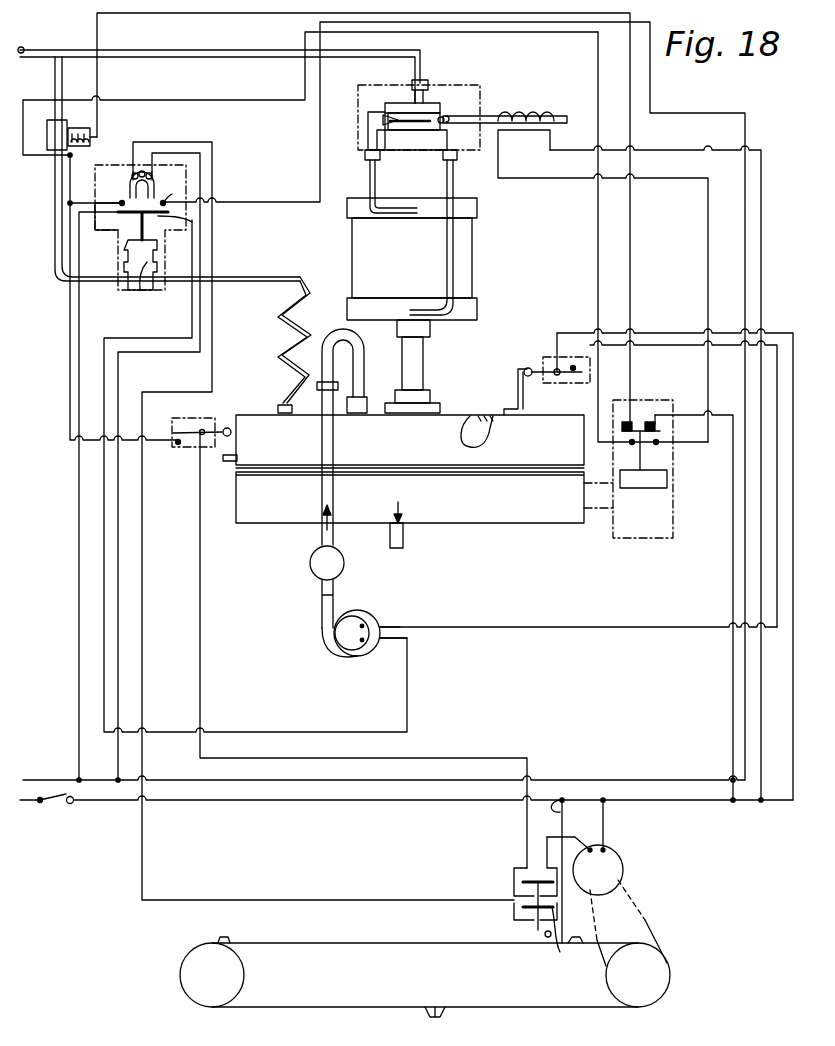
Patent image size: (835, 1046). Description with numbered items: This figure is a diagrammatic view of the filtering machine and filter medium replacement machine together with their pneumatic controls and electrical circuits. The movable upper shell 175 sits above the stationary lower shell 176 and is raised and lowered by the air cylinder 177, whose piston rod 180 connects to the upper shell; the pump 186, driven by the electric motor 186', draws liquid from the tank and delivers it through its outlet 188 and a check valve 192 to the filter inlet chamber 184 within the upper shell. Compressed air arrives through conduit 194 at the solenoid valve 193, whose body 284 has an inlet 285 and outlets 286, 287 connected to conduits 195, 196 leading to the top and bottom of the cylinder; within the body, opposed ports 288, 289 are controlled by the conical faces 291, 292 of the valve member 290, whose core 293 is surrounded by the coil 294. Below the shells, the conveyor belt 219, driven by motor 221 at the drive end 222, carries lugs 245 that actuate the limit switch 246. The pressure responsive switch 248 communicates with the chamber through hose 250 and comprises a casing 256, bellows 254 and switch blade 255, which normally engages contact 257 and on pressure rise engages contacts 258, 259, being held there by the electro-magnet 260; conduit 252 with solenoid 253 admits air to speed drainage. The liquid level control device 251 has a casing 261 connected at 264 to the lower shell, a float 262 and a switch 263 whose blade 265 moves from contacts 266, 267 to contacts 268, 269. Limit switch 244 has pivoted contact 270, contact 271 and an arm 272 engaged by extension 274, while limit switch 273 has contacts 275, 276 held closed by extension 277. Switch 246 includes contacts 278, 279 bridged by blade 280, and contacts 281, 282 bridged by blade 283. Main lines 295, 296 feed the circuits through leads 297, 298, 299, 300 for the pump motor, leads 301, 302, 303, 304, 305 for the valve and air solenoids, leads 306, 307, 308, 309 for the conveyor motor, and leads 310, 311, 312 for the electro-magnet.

The upper shell 175 is at (434, 448).
The lower shell 176 is at (497, 506).
The air cylinder 177 is at (480, 228).
The piston rod 180 is at (424, 352).
The filter inlet chamber 184 is at (478, 413).
The pump 186 is at (374, 628).
The electric motor 186' is at (355, 656).
The outlet 188 is at (334, 600).
The check valve 192 is at (312, 571).
The solenoid valve 193 is at (501, 71).
The conduit 194 is at (230, 50).
The conduit 195 is at (376, 186).
The conduit 196 is at (456, 270).
The conveyor belt 219 is at (410, 943).
The electric motor 221 is at (624, 866).
The feed or drive end 222 is at (672, 962).
The limit switch 244 is at (217, 409).
The lugs 245 is at (229, 937).
The limit switch 246 is at (537, 919).
The pressure responsive switch 248 is at (117, 306).
The flexible conduit or hose 250 is at (280, 350).
The liquid level control device 251 is at (687, 518).
The conduit 252 is at (58, 224).
The solenoid 253 is at (48, 140).
The pressure responsive bellows 254 is at (143, 292).
The switch blade 255 is at (130, 215).
The casing 256 is at (122, 267).
The contact 257 is at (170, 218).
The contact 258 is at (109, 204).
The contact 259 is at (166, 189).
The electro-magnet 260 is at (132, 178).
The casing 261 is at (656, 540).
The float 262 is at (654, 488).
The float actuated switch 263 is at (640, 428).
The connection 264 is at (598, 512).
The blade 265 is at (626, 420).
The contact 266 is at (652, 420).
The contact 267 is at (660, 430).
The contact 268 is at (630, 444).
The contact 269 is at (658, 444).
The pivoted contact 270 is at (186, 430).
The contact 271 is at (176, 445).
The operating arm 272 is at (228, 428).
The limit switch 273 is at (548, 356).
The extension 274 is at (236, 458).
The pivoted contact 275 is at (572, 378).
The fixed contact 276 is at (574, 366).
The extension 277 is at (518, 418).
The contact 278 is at (522, 884).
The contact 279 is at (568, 871).
The switch blade 280 is at (527, 876).
The contact 281 is at (572, 935).
The contact 282 is at (522, 908).
The switch blade 283 is at (546, 937).
The body 284 is at (458, 88).
The inlet 285 is at (420, 108).
The outlet 286 is at (367, 140).
The outlet 287 is at (454, 150).
The valve port 288 is at (380, 112).
The valve port 289 is at (447, 118).
The valve member 290 is at (430, 128).
The conical valve face 291 is at (392, 127).
The conical valve face 292 is at (452, 120).
The core 293 is at (556, 116).
The coil 294 is at (522, 132).
The main line 295 is at (305, 205).
The main line 296 is at (733, 584).
The lead 297 is at (79, 711).
The lead 298 is at (196, 273).
The lead 299 is at (592, 630).
The lead 300 is at (794, 333).
The lead 301 is at (760, 721).
The lead 302 is at (708, 214).
The lead 303 is at (290, 102).
The lead 304 is at (70, 194).
The lead 305 is at (103, 100).
The lead 306 is at (604, 826).
The lead 307 is at (576, 828).
The lead 308 is at (200, 558).
The lead 309 is at (70, 406).
The lead 310 is at (557, 790).
The lead 311 is at (150, 142).
The lead 312 is at (183, 153).